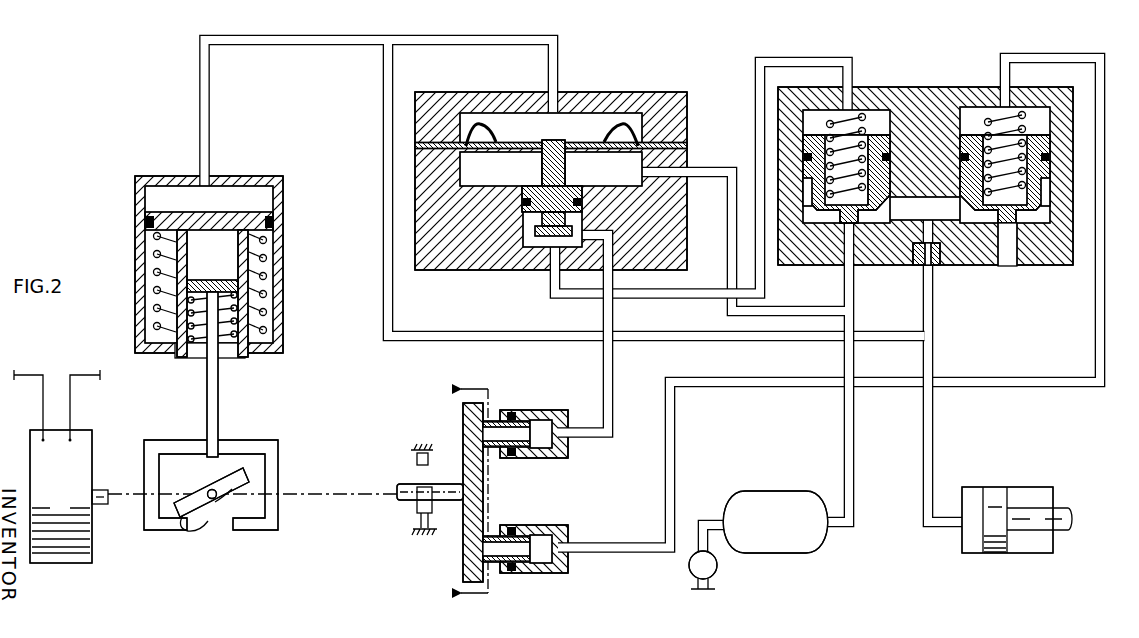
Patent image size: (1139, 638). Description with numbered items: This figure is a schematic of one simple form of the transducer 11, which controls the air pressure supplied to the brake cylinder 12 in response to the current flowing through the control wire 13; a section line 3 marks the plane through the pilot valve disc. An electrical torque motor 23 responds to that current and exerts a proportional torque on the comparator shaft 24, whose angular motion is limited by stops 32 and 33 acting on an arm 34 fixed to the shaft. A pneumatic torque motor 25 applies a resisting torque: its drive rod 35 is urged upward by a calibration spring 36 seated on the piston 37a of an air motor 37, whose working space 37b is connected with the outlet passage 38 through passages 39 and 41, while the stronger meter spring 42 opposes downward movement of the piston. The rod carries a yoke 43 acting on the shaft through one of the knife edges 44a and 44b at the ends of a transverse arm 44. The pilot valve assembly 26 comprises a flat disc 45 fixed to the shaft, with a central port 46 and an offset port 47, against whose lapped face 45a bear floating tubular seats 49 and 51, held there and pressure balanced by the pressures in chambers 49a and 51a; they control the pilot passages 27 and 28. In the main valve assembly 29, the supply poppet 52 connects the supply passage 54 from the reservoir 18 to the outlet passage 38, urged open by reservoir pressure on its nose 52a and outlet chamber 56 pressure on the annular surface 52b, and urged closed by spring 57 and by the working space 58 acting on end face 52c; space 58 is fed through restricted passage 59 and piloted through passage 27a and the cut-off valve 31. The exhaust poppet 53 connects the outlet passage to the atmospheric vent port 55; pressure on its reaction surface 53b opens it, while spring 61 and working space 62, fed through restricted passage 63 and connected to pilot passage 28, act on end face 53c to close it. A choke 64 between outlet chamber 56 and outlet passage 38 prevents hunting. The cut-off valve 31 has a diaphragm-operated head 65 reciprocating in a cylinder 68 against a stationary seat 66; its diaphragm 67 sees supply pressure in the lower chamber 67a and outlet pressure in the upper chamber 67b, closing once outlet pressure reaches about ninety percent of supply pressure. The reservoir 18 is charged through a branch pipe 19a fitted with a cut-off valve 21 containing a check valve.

The section line 3- 3 is at (458, 491).
The transducer 11 is at (104, 115).
The brake cylinder 12 is at (1003, 486).
The control wire 13 is at (80, 372).
The reservoir 18 is at (780, 492).
The branch pipe 19a is at (703, 515).
The cut-off valve 21 is at (718, 568).
The electrical torque motor 23 is at (92, 449).
The comparator shaft 24 is at (400, 481).
The pneumatic torque motor 25 is at (292, 367).
The pilot valve assembly 26 is at (543, 475).
The pilot passage 27 is at (623, 362).
The passage 27a is at (817, 58).
The pilot passage 28 is at (628, 536).
The main valve assembly 29 is at (923, 76).
The cut-off valve 31 is at (615, 78).
The stop 32 is at (419, 531).
The stop 33 is at (417, 457).
The arm 34 is at (417, 506).
The drive rod 35 is at (208, 389).
The calibration spring 36 is at (230, 342).
The air motor 37 is at (290, 182).
The piston 37a is at (151, 214).
The working space 37b is at (190, 195).
The outlet passage 38 is at (935, 363).
The passage 39 is at (276, 37).
The passage 41 is at (383, 226).
The meter spring 42 is at (263, 253).
The yoke 43 is at (262, 439).
The transverse arm 44 is at (228, 476).
The knife edge 44a is at (192, 520).
The knife edge 44b is at (242, 486).
The disc 45 is at (465, 411).
The disc face 45a is at (488, 494).
The through port 46 is at (475, 430).
The through port 47 is at (470, 553).
The tubular valve seat 49 is at (498, 410).
The chamber 49a is at (541, 425).
The tubular valve seat 51 is at (497, 565).
The chamber 51a is at (568, 573).
The supply poppet valve 52 is at (860, 179).
The nose 52a is at (875, 245).
The annular surface 52b is at (803, 180).
The upper end face 52c is at (878, 110).
The exhaust poppet valve 53 is at (1045, 203).
The annular reaction surface 53b is at (1050, 180).
The upper end face 53c is at (966, 110).
The supply passage 54 is at (845, 358).
The atmospheric vent port 55 is at (1011, 255).
The outlet chamber 56 is at (956, 221).
The spring 57 is at (828, 98).
The working space 58 is at (808, 125).
The restricted passage 59 is at (840, 226).
The spring 61 is at (1020, 128).
The working space 62 is at (1040, 110).
The restricted passage 63 is at (997, 212).
The choke 64 is at (912, 262).
The valve head 65 is at (552, 226).
The stationary seat 66 is at (550, 240).
The diaphragm 67 is at (551, 167).
The lower diaphragm chamber 67a is at (510, 178).
The upper diaphragm chamber 67b is at (552, 133).
The cylinder 68 is at (583, 220).